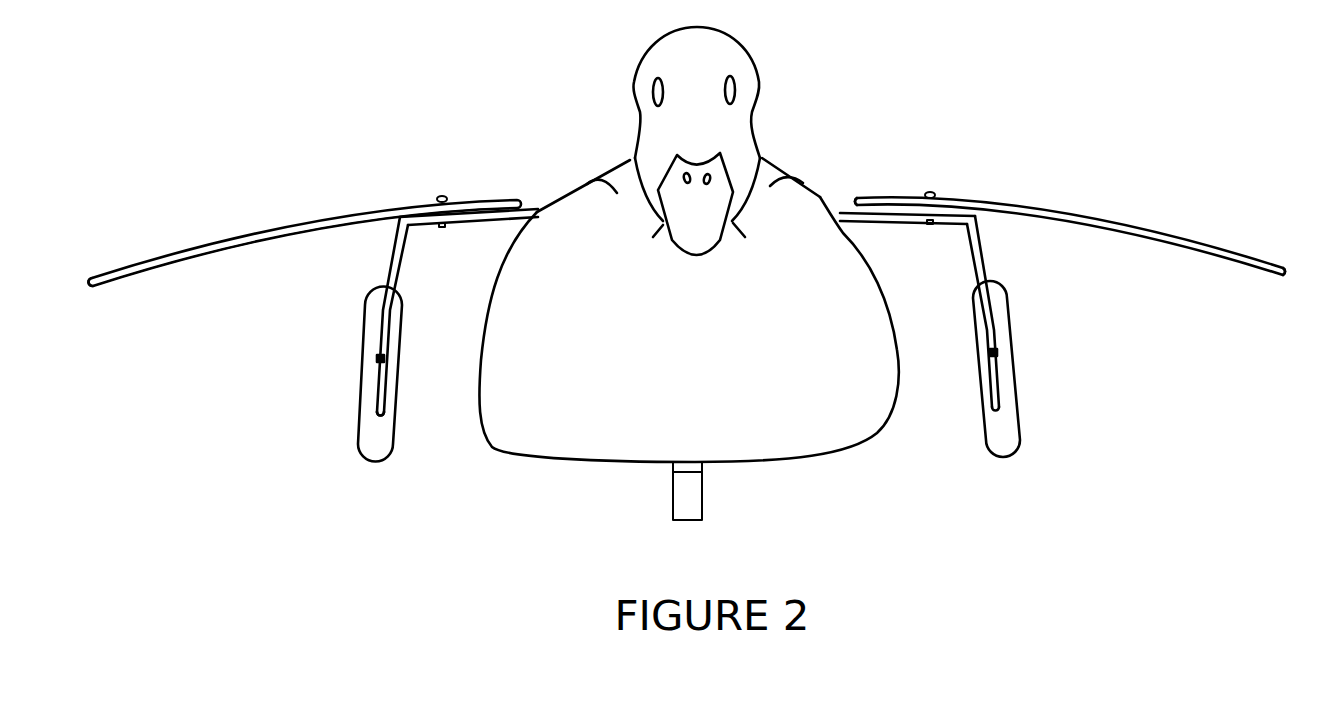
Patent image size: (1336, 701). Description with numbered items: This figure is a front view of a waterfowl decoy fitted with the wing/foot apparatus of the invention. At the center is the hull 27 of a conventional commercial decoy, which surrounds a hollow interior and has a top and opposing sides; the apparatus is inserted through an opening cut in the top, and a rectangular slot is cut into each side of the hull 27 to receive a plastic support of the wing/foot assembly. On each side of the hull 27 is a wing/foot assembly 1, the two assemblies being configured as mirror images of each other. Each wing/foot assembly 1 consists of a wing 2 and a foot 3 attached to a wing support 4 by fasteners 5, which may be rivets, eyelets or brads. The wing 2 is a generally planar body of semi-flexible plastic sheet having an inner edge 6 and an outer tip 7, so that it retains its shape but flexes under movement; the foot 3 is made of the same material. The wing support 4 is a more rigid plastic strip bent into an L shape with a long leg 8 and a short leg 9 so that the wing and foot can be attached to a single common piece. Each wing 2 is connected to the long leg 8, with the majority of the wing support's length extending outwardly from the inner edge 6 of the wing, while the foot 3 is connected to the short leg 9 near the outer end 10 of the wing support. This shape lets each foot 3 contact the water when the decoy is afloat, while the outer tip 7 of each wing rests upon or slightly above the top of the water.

The wing/foot assembly 1 is at (345, 267).
The wing 2 is at (260, 228).
The foot 3 is at (368, 443).
The wing support 4 is at (975, 240).
The fasteners 5 is at (440, 196).
The inner edge 6 is at (857, 200).
The outer tip 7 is at (90, 280).
The long leg 8 is at (532, 207).
The short leg 9 is at (400, 243).
The outer end 10 is at (380, 417).
The hull 27 is at (612, 392).